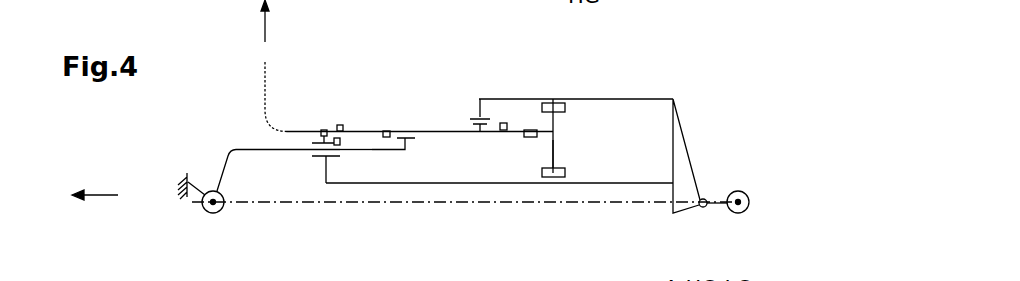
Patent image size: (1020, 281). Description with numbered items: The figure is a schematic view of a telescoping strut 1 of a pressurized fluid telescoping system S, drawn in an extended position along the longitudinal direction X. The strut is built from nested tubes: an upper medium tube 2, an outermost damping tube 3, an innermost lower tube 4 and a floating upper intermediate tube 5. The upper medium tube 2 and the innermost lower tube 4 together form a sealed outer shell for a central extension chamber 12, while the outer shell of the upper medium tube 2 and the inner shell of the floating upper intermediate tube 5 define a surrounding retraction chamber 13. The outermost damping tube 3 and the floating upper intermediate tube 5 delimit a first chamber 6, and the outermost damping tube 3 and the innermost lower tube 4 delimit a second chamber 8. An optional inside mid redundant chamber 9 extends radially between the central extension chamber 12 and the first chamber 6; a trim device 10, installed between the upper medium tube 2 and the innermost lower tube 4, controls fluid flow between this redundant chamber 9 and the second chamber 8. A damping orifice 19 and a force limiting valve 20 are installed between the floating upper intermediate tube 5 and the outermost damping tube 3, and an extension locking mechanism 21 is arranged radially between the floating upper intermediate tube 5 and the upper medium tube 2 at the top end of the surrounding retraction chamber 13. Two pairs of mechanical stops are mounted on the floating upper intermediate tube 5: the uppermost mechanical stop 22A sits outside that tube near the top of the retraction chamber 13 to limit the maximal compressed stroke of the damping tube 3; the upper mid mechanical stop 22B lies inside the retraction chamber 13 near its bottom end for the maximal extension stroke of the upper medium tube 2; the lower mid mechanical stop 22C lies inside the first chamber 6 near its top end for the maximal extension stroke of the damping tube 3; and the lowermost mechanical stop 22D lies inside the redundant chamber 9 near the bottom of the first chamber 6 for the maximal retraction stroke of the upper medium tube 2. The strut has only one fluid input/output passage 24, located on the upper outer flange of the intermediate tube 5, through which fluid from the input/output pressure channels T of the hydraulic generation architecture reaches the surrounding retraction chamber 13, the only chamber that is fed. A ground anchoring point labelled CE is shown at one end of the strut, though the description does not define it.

The telescoping strut 1 is at (573, 223).
The pressurized fluid telescoping system S is at (475, 221).
The upper medium tube 2 is at (245, 147).
The outermost damping tube 3 is at (490, 98).
The innermost lower tube 4 is at (482, 183).
The floating upper intermediate tube 5 is at (362, 130).
The first chamber 6 is at (510, 110).
The second chamber 8 is at (647, 118).
The inside mid redundant chamber 9 is at (430, 143).
The trim device 10 is at (557, 168).
The central extension chamber 12 is at (268, 186).
The surrounding retraction chamber 13 is at (369, 139).
The damping orifice 19 is at (579, 113).
The force limiting valve 20 is at (557, 98).
The extension locking mechanism 21 is at (322, 129).
The uppermost mechanical stop 22A is at (339, 125).
The upper mid mechanical stop 22B is at (388, 130).
The lower mid mechanical stop 22C is at (503, 133).
The lowermost mechanical stop 22D is at (532, 138).
The fluid input/output passage 24 is at (343, 144).
The input/output pressure channels T is at (263, 107).
The fixed bearing / coupling element CE is at (178, 173).
The longitudinal direction X is at (106, 195).